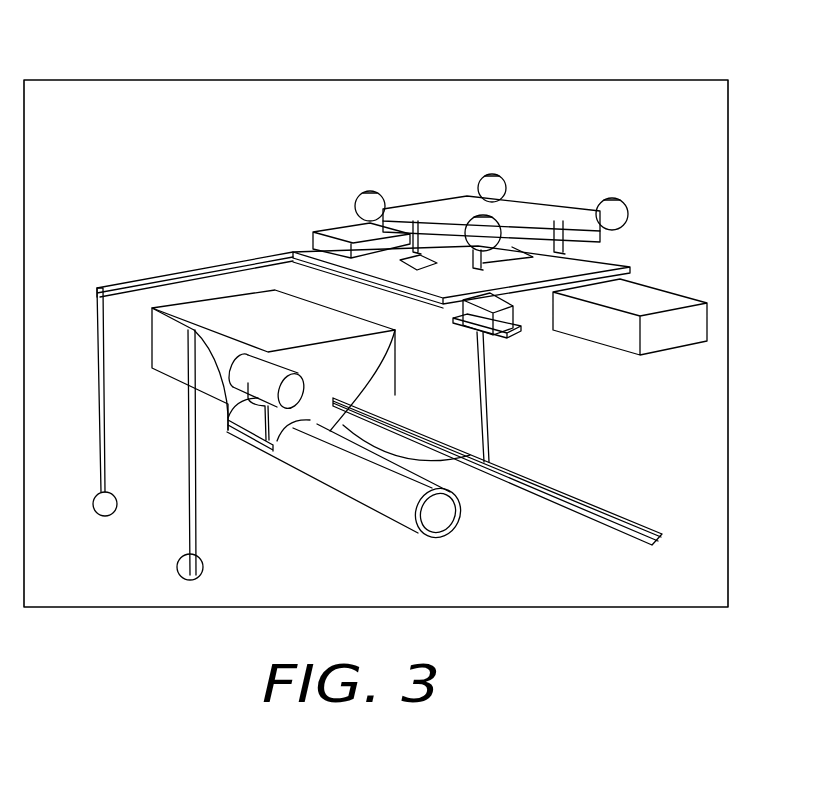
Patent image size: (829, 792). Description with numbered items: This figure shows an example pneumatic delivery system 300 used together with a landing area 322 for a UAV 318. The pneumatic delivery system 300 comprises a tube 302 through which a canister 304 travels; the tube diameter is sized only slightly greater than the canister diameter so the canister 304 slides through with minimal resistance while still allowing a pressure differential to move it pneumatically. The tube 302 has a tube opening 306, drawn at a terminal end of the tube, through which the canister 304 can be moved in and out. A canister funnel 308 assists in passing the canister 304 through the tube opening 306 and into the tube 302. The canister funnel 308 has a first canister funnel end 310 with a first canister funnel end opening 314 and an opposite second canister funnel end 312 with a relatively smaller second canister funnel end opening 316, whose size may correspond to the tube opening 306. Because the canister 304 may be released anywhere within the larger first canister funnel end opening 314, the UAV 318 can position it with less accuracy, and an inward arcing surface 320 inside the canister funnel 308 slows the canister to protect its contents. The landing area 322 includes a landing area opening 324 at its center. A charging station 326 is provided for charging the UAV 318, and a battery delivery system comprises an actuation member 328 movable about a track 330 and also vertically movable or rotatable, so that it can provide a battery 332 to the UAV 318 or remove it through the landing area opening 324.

The pneumatic delivery system 300 is at (530, 525).
The tube 302 is at (393, 522).
The canister 304 is at (262, 376).
The tube opening 306 is at (297, 438).
The canister funnel 308 is at (362, 377).
The first canister funnel end 310 is at (368, 310).
The second canister funnel end 312 is at (483, 446).
The first canister funnel end opening 314 is at (267, 310).
The second canister funnel end opening 316 is at (231, 388).
The UAV 318 is at (496, 195).
The inward arcing surface 320 is at (358, 345).
The landing area 322 is at (585, 265).
The landing area opening 324 is at (503, 272).
The charging station 326 is at (693, 323).
The actuation member 328 is at (490, 355).
The track 330 is at (640, 520).
The battery 332 is at (505, 314).